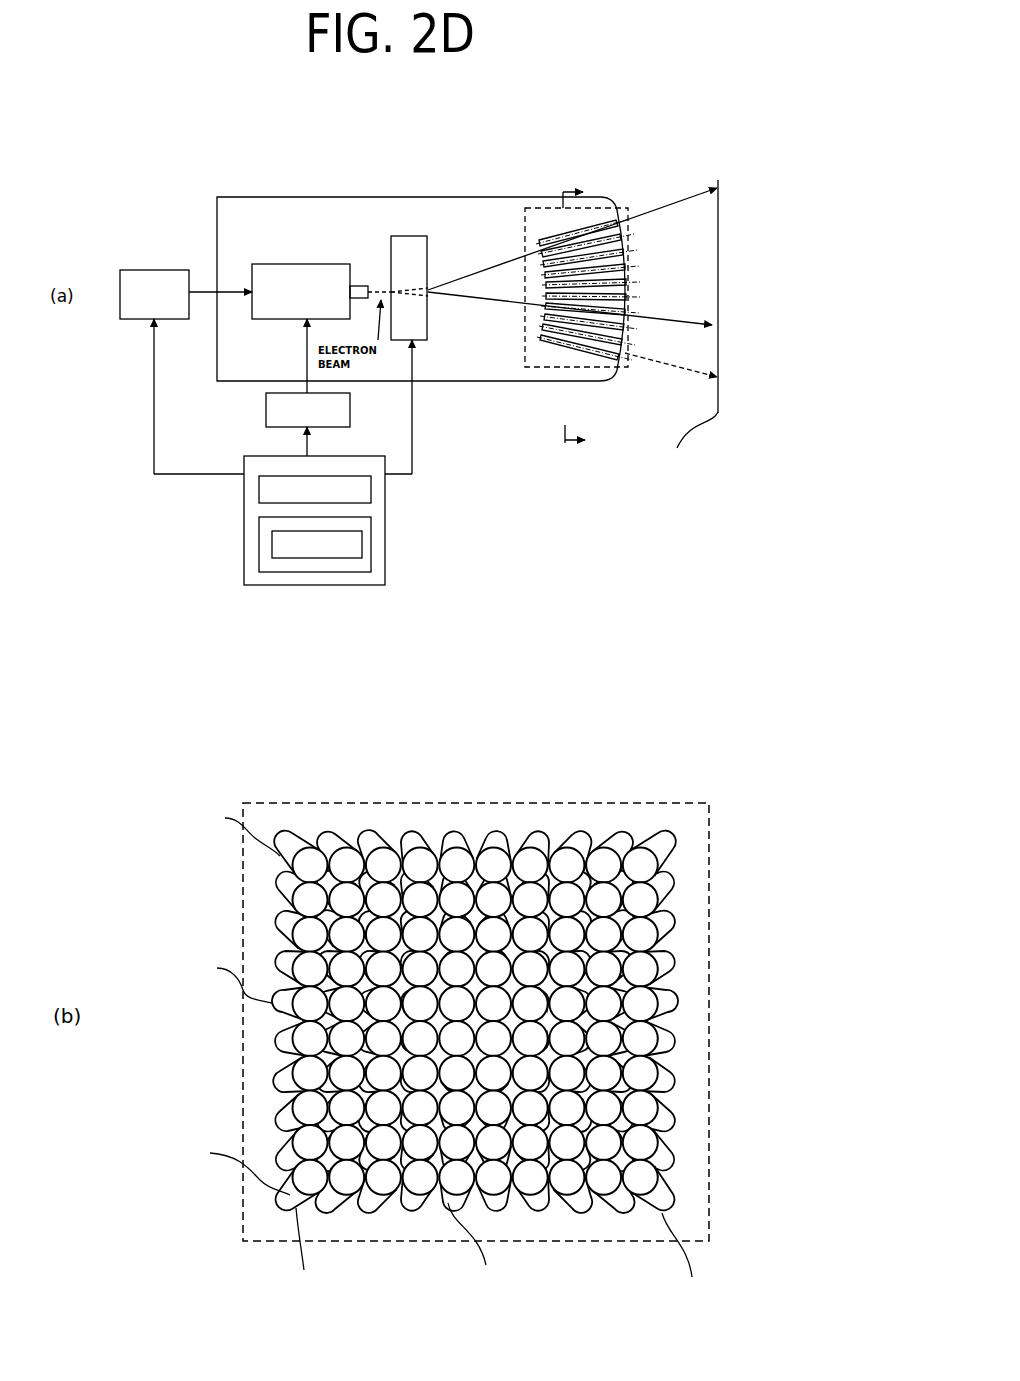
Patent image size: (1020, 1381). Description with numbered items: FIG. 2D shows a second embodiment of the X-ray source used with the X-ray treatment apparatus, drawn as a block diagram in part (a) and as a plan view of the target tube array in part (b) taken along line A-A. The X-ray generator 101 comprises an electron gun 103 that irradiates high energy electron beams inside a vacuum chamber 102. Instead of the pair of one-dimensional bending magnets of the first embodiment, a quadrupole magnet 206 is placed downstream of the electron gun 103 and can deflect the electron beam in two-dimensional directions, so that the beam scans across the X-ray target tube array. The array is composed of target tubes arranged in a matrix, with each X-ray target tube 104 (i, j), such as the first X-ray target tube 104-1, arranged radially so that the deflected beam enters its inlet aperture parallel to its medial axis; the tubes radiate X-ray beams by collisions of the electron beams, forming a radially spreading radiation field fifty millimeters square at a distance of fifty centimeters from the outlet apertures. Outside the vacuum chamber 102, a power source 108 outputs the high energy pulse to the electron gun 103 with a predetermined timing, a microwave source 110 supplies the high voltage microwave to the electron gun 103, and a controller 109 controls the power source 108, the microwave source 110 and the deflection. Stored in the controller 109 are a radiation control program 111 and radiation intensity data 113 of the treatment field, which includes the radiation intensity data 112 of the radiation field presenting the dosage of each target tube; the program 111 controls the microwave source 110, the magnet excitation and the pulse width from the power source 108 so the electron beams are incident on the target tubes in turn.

The X-ray generator 101 is at (258, 166).
The vacuum chamber 102 is at (470, 197).
The electron gun 103 is at (300, 264).
The X-ray target tube 104-1 is at (592, 222).
The X-ray target tube 104 is at (603, 322).
The power source 108 is at (140, 270).
The controller 109 is at (244, 510).
The microwave source 110 is at (266, 410).
The radiation control program 111 is at (259, 488).
The radiation intensity data of the radiation field 112 is at (357, 545).
The radiation intensity data of the treatment field 113 is at (259, 530).
The quadrupole magnet 206 is at (412, 236).